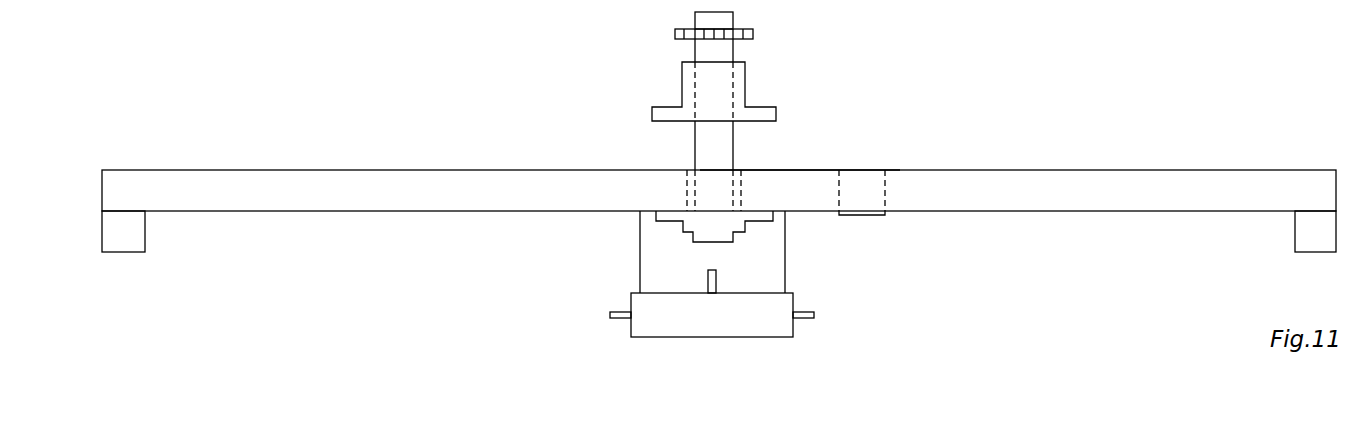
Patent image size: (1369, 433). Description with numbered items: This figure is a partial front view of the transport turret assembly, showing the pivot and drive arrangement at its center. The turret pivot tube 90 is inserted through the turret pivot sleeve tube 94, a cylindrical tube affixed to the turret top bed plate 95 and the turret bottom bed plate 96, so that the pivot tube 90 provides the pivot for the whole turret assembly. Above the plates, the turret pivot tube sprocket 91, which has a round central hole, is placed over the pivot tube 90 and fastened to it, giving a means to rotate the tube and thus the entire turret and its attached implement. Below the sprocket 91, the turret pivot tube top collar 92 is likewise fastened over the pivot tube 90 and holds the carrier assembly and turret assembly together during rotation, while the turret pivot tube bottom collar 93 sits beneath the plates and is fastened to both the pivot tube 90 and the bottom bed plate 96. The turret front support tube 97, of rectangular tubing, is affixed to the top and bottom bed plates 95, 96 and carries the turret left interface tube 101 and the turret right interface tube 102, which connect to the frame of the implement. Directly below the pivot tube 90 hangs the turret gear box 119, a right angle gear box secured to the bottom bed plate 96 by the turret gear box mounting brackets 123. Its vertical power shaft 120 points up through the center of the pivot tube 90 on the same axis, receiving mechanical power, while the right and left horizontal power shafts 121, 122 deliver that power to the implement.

The turret pivot tube 90 is at (695, 140).
The turret pivot tube sprocket 91 is at (680, 31).
The turret pivot tube top collar 92 is at (683, 77).
The turret pivot tube bottom collar 93 is at (683, 223).
The turret pivot sleeve tube 94 is at (742, 183).
The turret top bed plate 95 is at (788, 170).
The turret bottom bed plate 96 is at (818, 211).
The turret front support tube 97 is at (1090, 170).
The turret left interface tube 101 is at (145, 236).
The turret right interface tube 102 is at (1295, 238).
The turret gear box 119 is at (730, 337).
The turret gear box vertical power shaft 120 is at (717, 271).
The turret gear box right horizontal power shaft 121 is at (617, 319).
The turret gear box left horizontal power shaft 122 is at (805, 319).
The turret gear box mounting bracket 123 is at (641, 276).